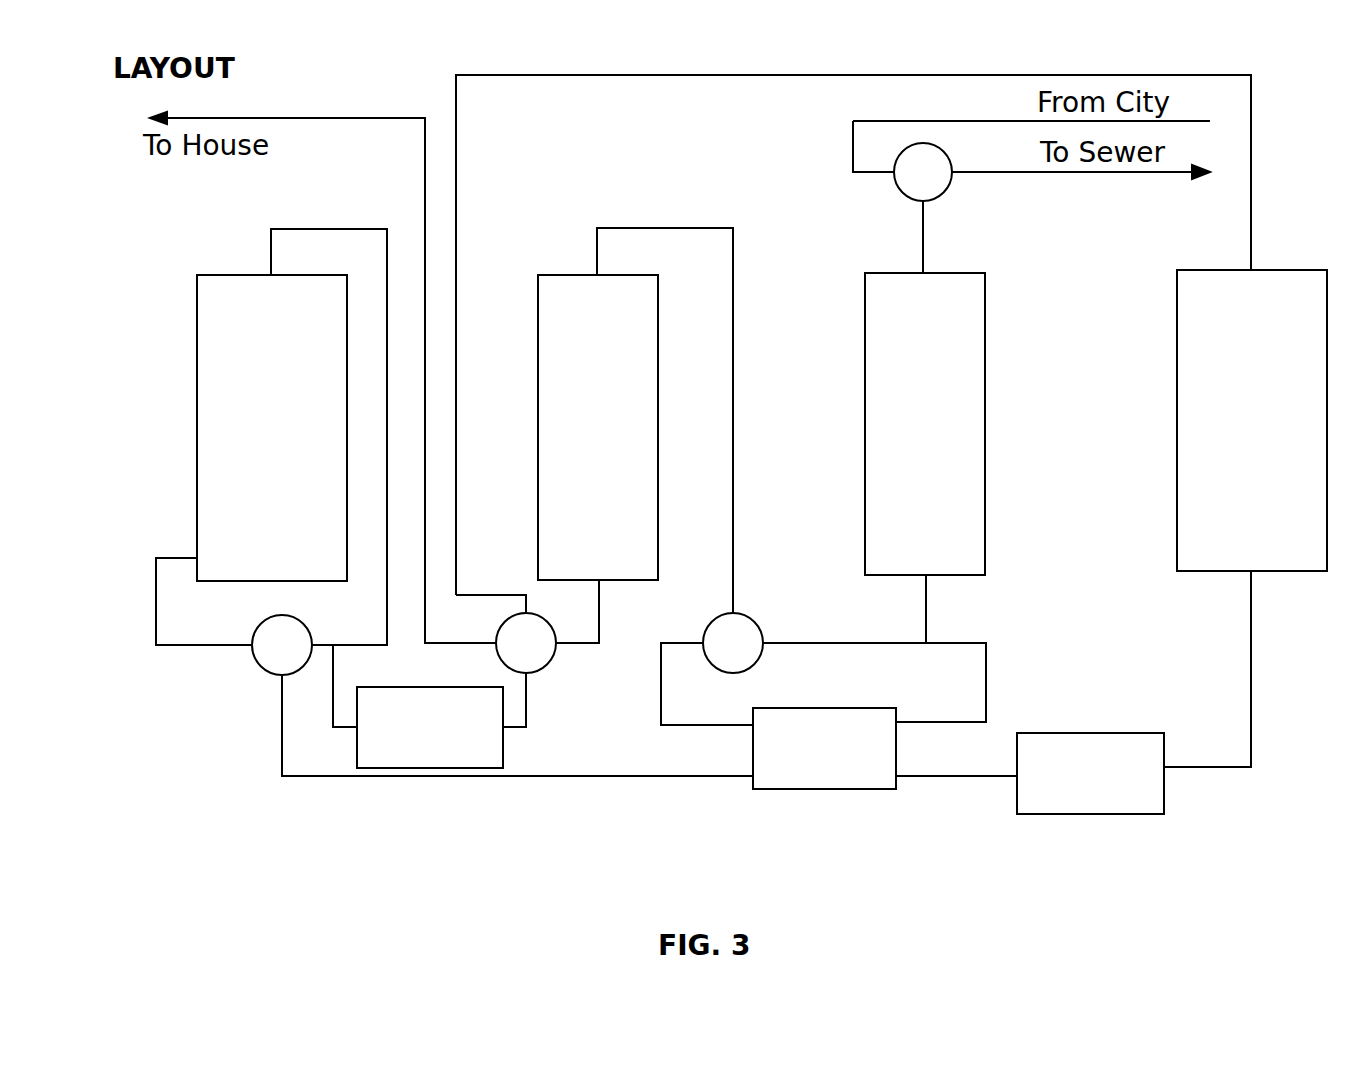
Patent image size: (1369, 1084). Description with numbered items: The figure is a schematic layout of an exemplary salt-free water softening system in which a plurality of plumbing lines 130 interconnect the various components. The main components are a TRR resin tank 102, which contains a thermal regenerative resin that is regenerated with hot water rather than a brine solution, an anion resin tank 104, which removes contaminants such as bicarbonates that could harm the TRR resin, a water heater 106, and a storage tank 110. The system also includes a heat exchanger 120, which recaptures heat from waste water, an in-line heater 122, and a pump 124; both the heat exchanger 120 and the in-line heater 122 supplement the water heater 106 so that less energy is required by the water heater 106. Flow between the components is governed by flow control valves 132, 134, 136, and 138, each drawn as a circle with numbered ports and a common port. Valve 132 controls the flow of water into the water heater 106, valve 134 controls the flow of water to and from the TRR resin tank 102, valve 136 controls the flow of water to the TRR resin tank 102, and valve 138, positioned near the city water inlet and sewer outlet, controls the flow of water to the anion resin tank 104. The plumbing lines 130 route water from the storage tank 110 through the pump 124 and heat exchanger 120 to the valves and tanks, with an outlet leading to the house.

The TRR resin tank 102 is at (575, 275).
The anion resin tank 104 is at (900, 273).
The water heater 106 is at (248, 275).
The storage tank 110 is at (1230, 270).
The heat exchanger 120 is at (823, 789).
The in-line heater 122 is at (430, 768).
The pump 124 is at (1090, 814).
The plumbing lines 130 is at (425, 180).
The flow control valve 132 is at (252, 650).
The flow control valve 134 is at (525, 612).
The flow control valve 136 is at (730, 612).
The flow control valve 138 is at (953, 185).